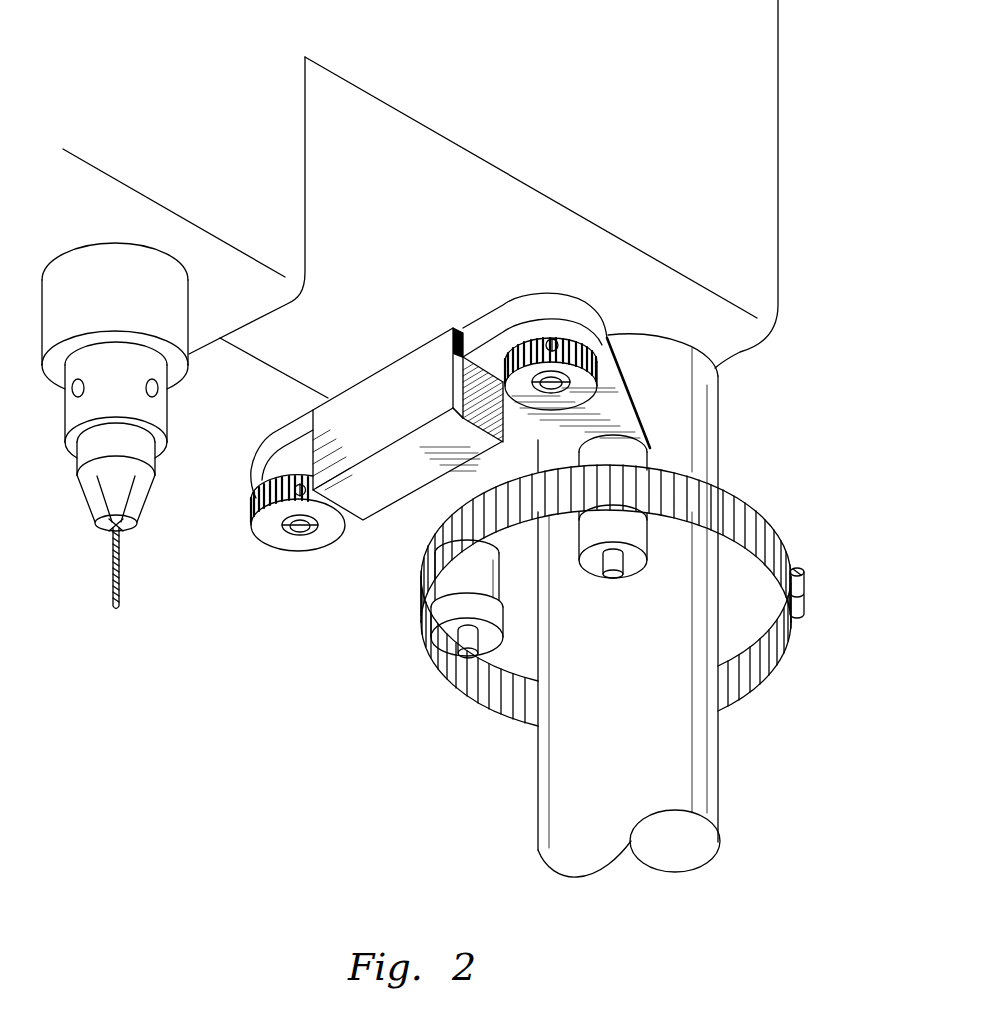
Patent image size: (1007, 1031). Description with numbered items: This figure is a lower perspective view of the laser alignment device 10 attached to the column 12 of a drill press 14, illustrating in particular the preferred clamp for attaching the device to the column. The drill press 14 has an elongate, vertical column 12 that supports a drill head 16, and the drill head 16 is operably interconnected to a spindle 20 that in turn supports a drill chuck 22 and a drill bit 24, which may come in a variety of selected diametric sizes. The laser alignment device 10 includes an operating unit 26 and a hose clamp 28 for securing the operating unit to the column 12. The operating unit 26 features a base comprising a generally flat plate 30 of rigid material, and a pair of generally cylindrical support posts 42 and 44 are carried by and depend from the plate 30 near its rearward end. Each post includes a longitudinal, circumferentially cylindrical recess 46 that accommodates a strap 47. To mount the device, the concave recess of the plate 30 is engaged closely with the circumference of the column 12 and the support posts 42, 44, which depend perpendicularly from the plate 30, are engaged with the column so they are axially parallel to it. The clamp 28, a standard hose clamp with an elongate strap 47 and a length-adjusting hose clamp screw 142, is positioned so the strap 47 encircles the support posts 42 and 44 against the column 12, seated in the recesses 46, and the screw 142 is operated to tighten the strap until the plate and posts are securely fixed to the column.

The laser alignment device 10 is at (232, 572).
The column 12 is at (720, 752).
The drill press 14 is at (782, 174).
The drill head 16 is at (778, 103).
The spindle 20 is at (105, 283).
The drill chuck 22 is at (147, 497).
The drill bit 24 is at (113, 582).
The operating unit 26 is at (372, 495).
The hose clamp 28 is at (752, 522).
The plate 30 is at (635, 392).
The cylindrical support post 42 is at (443, 643).
The cylindrical support post 44 is at (637, 577).
The circumferential cylindrical recess 46 is at (452, 580).
The strap 47 is at (732, 512).
The hose clamp screw 142 is at (805, 620).